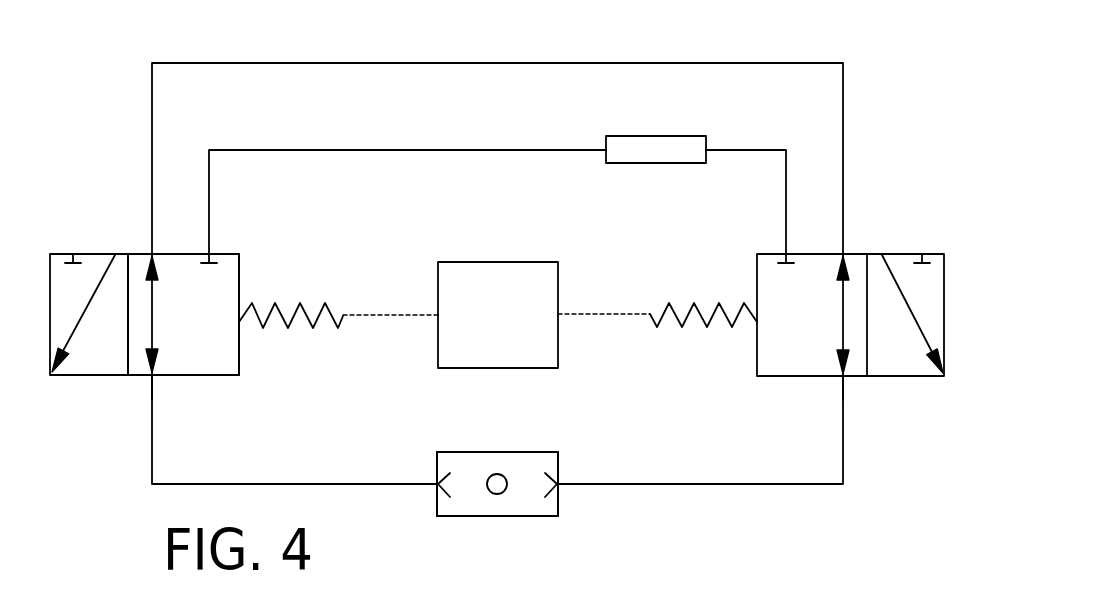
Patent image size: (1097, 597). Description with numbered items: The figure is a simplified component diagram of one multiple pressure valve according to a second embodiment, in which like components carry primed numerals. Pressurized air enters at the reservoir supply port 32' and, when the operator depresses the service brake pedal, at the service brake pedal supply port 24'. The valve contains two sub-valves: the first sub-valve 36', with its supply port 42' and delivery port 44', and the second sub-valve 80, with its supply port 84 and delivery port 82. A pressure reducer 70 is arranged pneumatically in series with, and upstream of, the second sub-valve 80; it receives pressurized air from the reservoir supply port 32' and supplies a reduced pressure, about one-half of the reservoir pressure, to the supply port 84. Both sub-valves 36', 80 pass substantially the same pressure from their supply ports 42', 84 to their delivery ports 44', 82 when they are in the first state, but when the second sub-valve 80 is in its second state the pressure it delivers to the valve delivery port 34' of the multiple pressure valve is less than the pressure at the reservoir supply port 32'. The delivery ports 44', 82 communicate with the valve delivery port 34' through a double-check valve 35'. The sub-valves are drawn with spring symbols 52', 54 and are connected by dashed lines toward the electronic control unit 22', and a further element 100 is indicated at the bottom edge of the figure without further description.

The service brake pedal supply port 24' is at (497, 242).
The reservoir supply port 32' is at (497, 174).
The pressure reducer 70 is at (677, 136).
The supply port 42' is at (144, 276).
The first sub-valve 36' is at (228, 305).
The delivery port 44' is at (193, 410).
The first solenoid spring 52' is at (338, 344).
The electronic control unit (ECU) 22' is at (498, 315).
The second solenoid spring 54 is at (755, 325).
The second sub-valve 80 is at (903, 254).
The supply port 84 is at (845, 254).
The delivery port 82 is at (845, 378).
The double-check valve 35' is at (531, 468).
The valve delivery port 34' is at (531, 507).
The brake system 100 is at (762, 596).